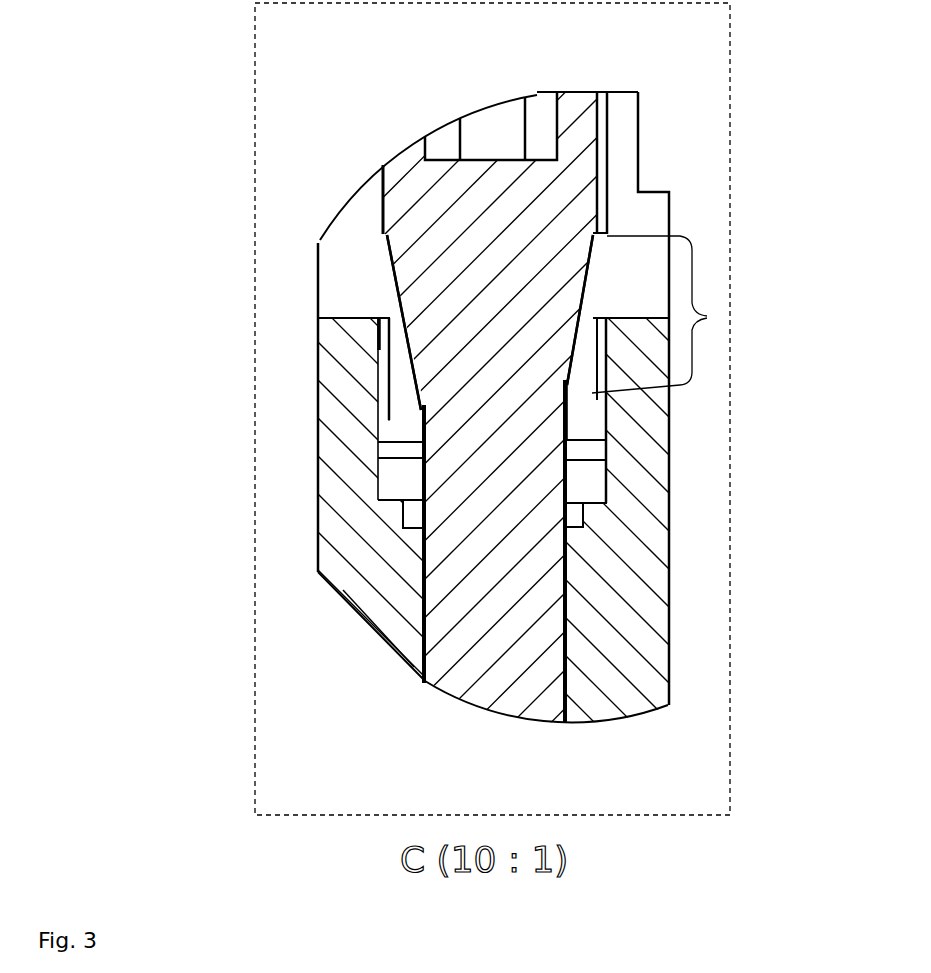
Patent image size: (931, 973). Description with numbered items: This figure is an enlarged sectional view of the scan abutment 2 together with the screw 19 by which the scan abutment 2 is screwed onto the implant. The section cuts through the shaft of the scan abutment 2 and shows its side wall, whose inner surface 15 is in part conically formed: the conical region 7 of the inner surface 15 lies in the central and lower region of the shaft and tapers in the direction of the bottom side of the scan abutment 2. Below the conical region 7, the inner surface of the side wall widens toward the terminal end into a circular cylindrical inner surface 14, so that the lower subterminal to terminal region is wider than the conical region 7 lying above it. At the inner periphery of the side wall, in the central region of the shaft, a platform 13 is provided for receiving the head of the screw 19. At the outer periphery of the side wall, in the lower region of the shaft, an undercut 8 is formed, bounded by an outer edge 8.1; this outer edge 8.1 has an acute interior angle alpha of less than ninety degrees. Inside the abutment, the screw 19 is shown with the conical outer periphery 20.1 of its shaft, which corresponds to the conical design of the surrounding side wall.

The scan abutment 2 is at (333, 177).
The conical region 7 is at (707, 316).
The undercut 8 is at (385, 335).
The outer edge 8.1 is at (378, 432).
The platform 13 is at (623, 233).
The cylindrical inner surface 14 is at (575, 428).
The inner surface 15 is at (593, 286).
The screw 19 is at (502, 467).
The conical outer periphery 20.1 is at (428, 370).